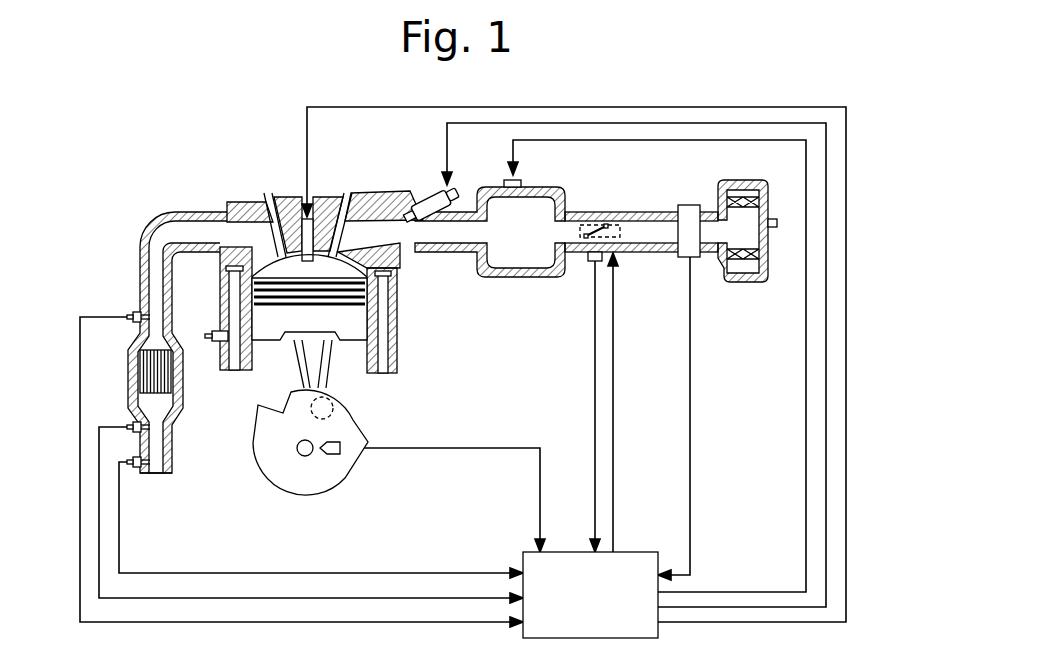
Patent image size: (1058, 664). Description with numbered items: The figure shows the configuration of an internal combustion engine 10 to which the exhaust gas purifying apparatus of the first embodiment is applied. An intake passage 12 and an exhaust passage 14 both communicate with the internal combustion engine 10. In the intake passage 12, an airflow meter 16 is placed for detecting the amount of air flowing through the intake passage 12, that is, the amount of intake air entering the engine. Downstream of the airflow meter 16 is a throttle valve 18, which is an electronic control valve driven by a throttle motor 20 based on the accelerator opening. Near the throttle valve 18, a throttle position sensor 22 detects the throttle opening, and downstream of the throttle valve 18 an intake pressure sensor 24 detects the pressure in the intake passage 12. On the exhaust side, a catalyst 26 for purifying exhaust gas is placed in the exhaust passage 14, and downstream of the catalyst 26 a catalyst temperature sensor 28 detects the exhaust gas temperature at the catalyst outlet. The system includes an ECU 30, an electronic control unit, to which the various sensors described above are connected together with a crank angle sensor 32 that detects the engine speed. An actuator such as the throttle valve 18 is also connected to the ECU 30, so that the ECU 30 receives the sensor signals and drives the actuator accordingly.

The internal combustion engine 10 is at (412, 328).
The intake passage 12 is at (650, 214).
The exhaust passage 14 is at (182, 230).
The airflow meter 16 is at (691, 206).
The throttle valve 18 is at (603, 226).
The throttle motor 20 is at (628, 254).
The throttle position sensor 22 is at (590, 261).
The intake pressure sensor 24 is at (510, 180).
The catalyst 26 is at (170, 376).
The catalyst temperature sensor 28 is at (134, 426).
The ECU 30 is at (522, 558).
The crank angle sensor 32 is at (332, 455).